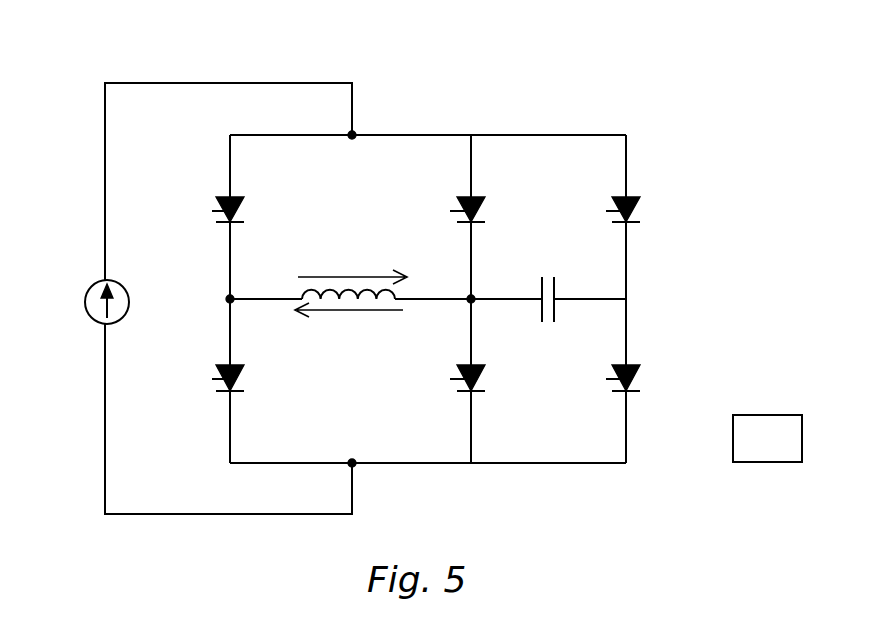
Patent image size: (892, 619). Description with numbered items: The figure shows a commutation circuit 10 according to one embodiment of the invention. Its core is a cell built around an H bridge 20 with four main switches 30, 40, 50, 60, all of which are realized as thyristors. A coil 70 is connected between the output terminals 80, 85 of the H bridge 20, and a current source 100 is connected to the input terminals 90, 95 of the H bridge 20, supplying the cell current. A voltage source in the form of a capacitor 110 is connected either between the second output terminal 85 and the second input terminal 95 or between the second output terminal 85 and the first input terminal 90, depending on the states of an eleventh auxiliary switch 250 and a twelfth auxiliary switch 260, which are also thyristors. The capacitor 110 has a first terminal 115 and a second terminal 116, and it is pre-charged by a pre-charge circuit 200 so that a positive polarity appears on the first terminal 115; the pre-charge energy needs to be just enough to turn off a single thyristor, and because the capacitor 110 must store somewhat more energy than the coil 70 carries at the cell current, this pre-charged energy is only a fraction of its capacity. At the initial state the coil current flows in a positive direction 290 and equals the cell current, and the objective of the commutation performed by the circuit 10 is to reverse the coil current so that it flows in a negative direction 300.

The commutation circuit 10 is at (523, 57).
The H bridge 20 is at (230, 157).
The main switch 30 is at (243, 203).
The main switch 40 is at (452, 378).
The main switch 50 is at (452, 211).
The main switch 60 is at (243, 372).
The coil 70 is at (347, 292).
The first output terminal 80 is at (230, 299).
The second output terminal 85 is at (471, 299).
The first input terminal 90 is at (352, 135).
The second input terminal 95 is at (352, 463).
The current source 100 is at (86, 302).
The capacitor 110 is at (573, 322).
The first terminal 115 is at (583, 268).
The capacitor plate 116 is at (540, 282).
The pre-charge circuit 200 is at (781, 415).
The eleventh auxiliary switch 250 is at (639, 373).
The twelfth auxiliary switch 260 is at (639, 204).
The positive direction 290 is at (331, 277).
The negative direction 300 is at (372, 312).